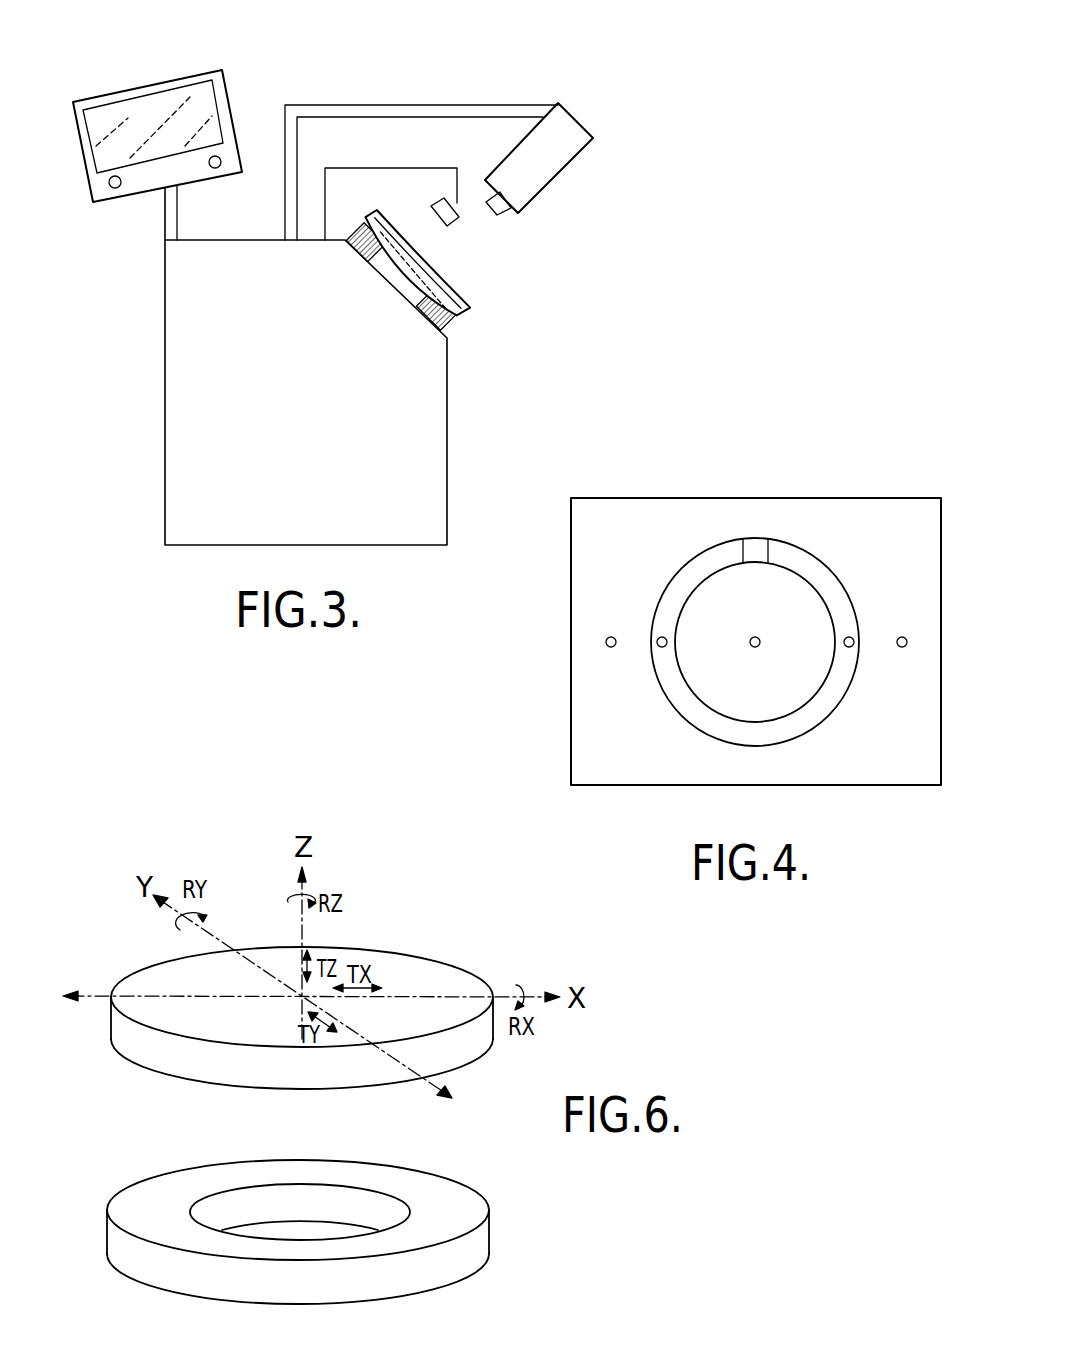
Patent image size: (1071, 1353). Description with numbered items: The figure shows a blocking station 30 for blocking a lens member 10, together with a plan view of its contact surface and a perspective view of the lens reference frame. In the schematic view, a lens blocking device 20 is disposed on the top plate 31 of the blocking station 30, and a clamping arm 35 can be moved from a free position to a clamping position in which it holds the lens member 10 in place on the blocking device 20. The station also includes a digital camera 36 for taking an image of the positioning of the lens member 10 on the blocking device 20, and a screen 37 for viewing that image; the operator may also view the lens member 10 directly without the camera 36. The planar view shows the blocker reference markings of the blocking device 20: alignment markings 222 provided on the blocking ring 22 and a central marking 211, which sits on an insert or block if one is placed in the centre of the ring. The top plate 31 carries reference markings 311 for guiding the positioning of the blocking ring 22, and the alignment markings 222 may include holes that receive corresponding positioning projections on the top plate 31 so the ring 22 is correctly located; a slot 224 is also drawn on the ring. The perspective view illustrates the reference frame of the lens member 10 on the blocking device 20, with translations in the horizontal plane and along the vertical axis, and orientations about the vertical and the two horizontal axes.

In FIG. 3, the lens member 10 is at (450, 282).
In FIG. 6, the lens member 10 is at (402, 947).
In FIG. 3, the lens blocking device 20 is at (448, 323).
In FIG. 6, the lens blocking device 20 is at (490, 1220).
In FIG. 4, the blocking ring 22 is at (662, 619).
In FIG. 3, the blocking station 30 is at (316, 84).
In FIG. 3, the top plate 31 is at (452, 335).
In FIG. 4, the top plate 31 is at (920, 764).
In FIG. 3, the clamping arm 35 is at (400, 167).
In FIG. 3, the digital camera 36 is at (543, 167).
In FIG. 3, the screen 37 is at (127, 117).
In FIG. 4, the central marking 211 is at (753, 638).
In FIG. 4, the alignment markings 222 is at (662, 648).
In FIG. 4, the key slot 224 is at (755, 548).
In FIG. 4, the reference markings 311 is at (902, 637).